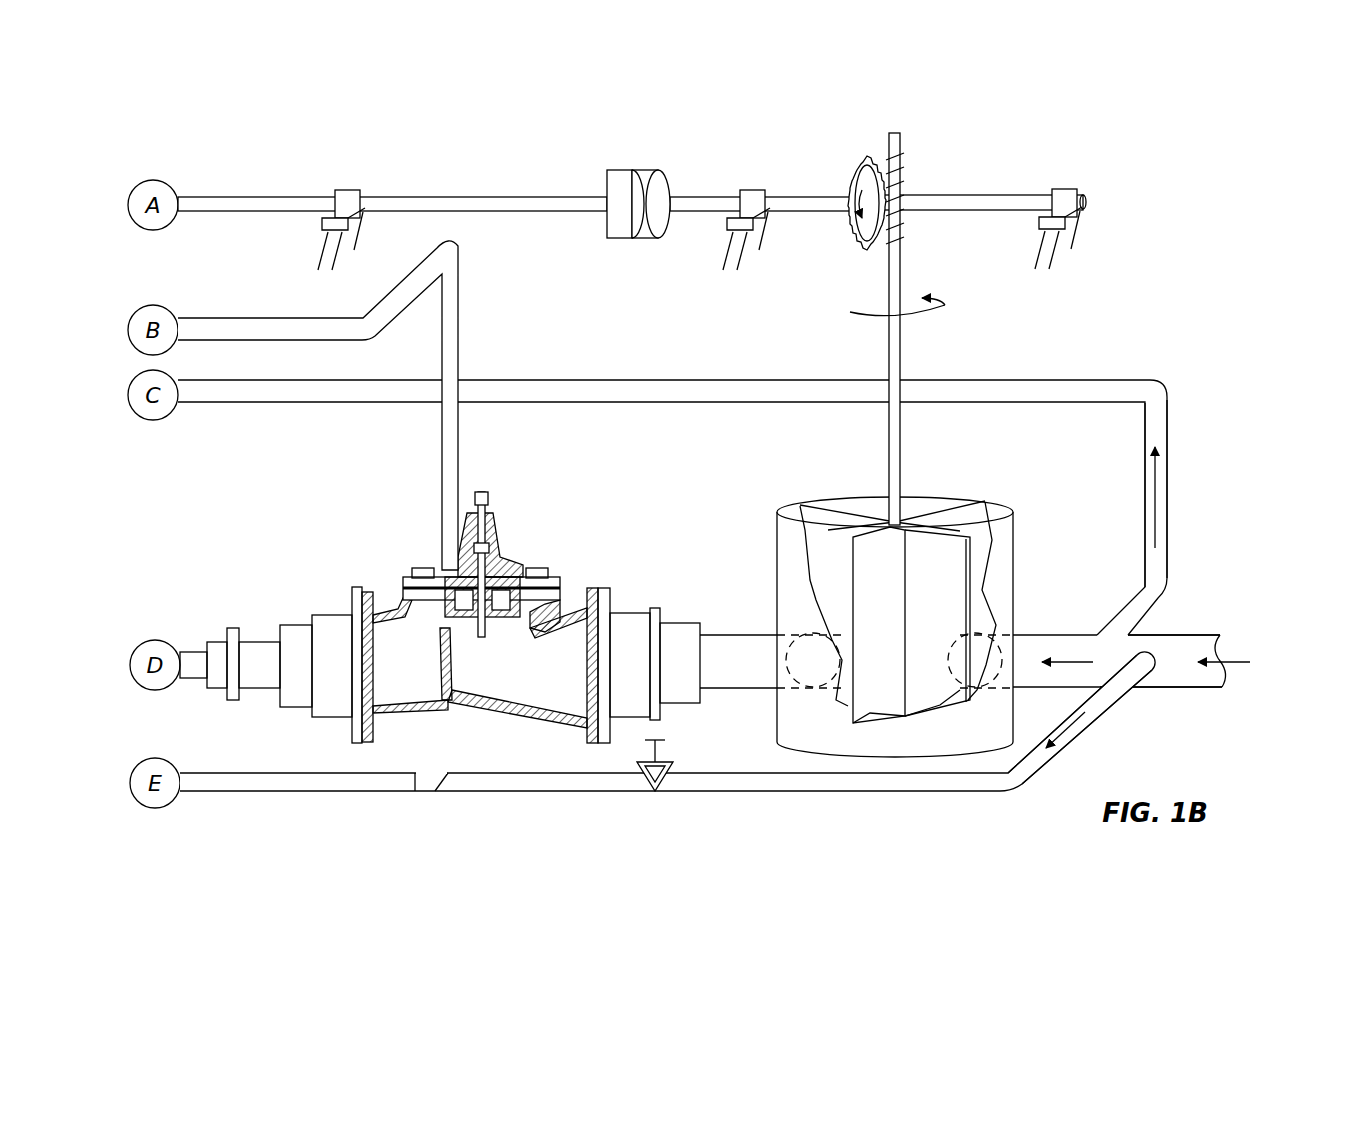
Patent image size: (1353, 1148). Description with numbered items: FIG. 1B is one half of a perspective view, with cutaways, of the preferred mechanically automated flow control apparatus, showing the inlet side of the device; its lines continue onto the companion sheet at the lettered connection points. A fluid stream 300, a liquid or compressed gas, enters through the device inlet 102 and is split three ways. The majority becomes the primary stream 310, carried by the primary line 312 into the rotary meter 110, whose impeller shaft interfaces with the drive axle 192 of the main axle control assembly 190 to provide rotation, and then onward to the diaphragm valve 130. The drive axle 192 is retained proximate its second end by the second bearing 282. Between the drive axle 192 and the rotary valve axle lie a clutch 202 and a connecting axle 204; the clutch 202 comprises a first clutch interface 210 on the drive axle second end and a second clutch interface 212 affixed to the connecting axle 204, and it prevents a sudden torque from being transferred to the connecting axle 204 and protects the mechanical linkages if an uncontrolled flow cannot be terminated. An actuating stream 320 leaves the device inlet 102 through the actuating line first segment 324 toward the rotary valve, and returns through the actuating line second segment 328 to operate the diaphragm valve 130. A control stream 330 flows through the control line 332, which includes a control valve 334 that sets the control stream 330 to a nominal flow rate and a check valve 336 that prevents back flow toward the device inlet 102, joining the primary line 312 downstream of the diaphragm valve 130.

The device inlet 102 is at (1198, 634).
The rotary meter 110 is at (998, 502).
The diaphragm valve 130 is at (570, 538).
The main axle control assembly 190 is at (970, 329).
The drive axle 192 is at (930, 196).
The clutch 202 is at (636, 216).
The connecting axle 204 is at (298, 197).
The first clutch interface 210 is at (655, 172).
The second clutch interface 212 is at (618, 170).
The second bearing 282 is at (760, 192).
The fluid stream 300 is at (1234, 662).
The primary stream 310 is at (1066, 664).
The primary line 312 is at (1048, 633).
The actuating stream 320 is at (1170, 503).
The actuating line first segment 324 is at (296, 403).
The actuating line second segment 328 is at (298, 317).
The control stream 330 is at (1062, 736).
The control line 332 is at (790, 792).
The control valve 334 is at (672, 760).
The check valve 336 is at (443, 762).